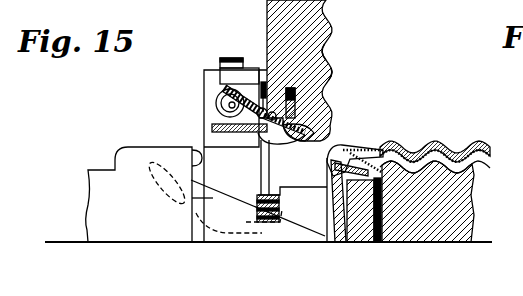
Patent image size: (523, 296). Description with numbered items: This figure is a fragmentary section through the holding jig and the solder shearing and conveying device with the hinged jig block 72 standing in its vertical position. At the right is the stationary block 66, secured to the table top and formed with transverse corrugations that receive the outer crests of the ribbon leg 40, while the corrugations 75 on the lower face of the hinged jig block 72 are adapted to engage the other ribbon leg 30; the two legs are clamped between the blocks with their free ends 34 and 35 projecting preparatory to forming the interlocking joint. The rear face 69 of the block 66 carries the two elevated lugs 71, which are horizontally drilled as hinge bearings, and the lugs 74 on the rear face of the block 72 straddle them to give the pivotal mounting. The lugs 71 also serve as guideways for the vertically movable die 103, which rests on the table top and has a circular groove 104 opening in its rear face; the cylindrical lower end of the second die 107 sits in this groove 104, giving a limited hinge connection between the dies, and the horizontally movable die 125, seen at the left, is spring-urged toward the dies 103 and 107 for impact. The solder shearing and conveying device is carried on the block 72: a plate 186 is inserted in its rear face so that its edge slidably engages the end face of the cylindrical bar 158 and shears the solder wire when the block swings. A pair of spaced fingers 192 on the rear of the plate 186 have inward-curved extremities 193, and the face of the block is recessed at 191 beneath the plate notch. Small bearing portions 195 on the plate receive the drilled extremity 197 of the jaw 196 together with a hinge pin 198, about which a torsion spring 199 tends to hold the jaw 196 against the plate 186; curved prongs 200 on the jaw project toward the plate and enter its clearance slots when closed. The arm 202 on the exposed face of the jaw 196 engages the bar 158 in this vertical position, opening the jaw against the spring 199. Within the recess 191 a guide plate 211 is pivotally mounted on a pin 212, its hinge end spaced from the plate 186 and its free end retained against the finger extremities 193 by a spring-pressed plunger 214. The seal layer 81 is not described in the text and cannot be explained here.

The ribbon leg 30 is at (495, 136).
The free end of ribbon leg 34 is at (380, 135).
The free end of ribbon leg 35 is at (395, 146).
The ribbon leg 40 is at (477, 174).
The block 66 is at (463, 207).
The rear face of block 69 is at (387, 213).
The lugs 71 is at (325, 212).
The hinged jig block 72 is at (328, 27).
The lugs 74 is at (292, 178).
The transverse corrugations 75 is at (326, 54).
The middle seal layer 81 is at (477, 160).
The vertically movable die 103 is at (363, 243).
The circular groove 104 is at (353, 235).
The second die 107 is at (335, 215).
The horizontally movable die 125 is at (184, 194).
The bar 158 is at (215, 102).
The plate 186 is at (212, 130).
The recess 191 is at (318, 133).
The fingers 192 is at (258, 188).
The finger extremities 193 is at (381, 143).
The bearing portions 195 is at (220, 119).
The jaw 196 is at (218, 90).
The drilled extremity of jaw 197 is at (263, 141).
The hinge pin 198 is at (330, 74).
The torsion spring 199 is at (256, 82).
The curved prongs 200 is at (220, 96).
The arm 202 is at (222, 67).
The guide plate 211 is at (258, 194).
The pin 212 is at (265, 158).
The spring-pressed plunger 214 is at (328, 106).